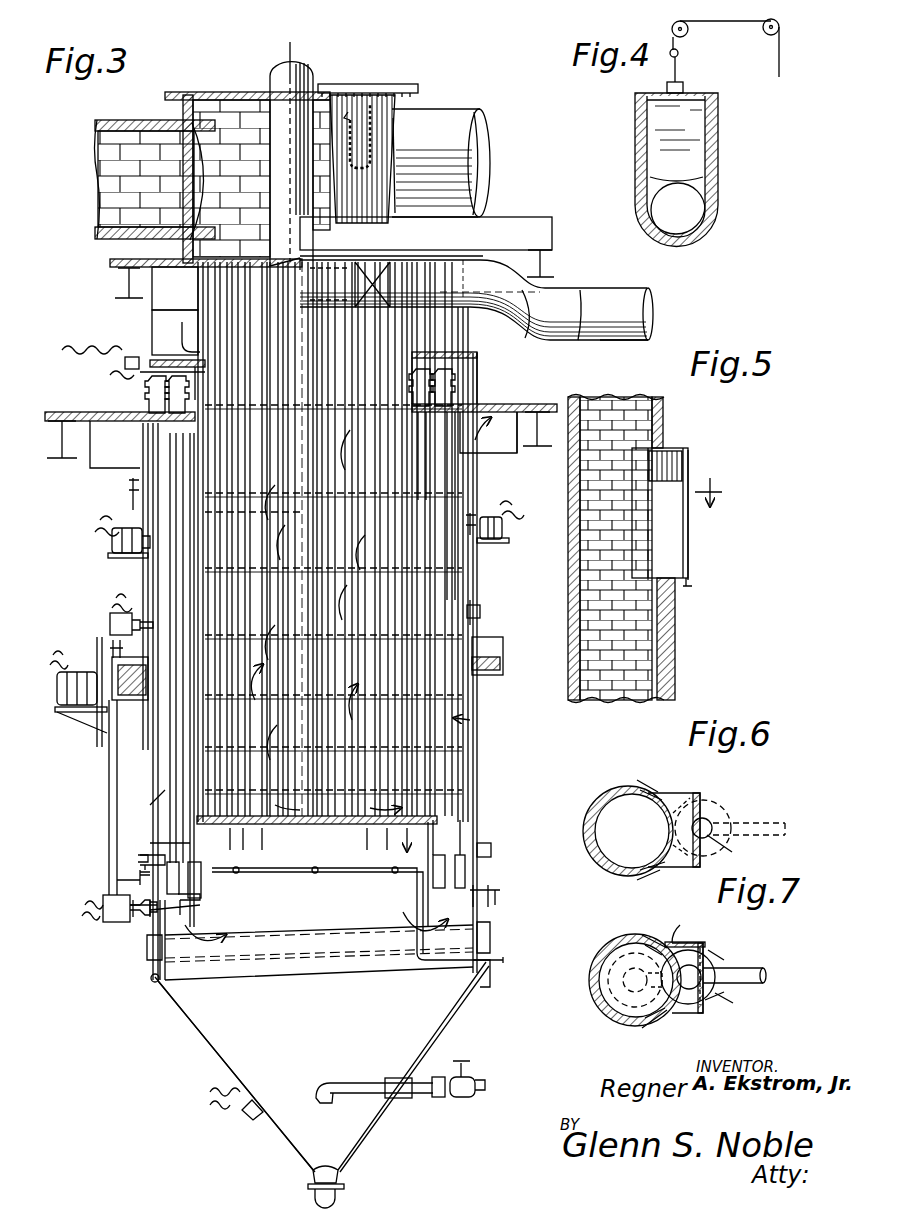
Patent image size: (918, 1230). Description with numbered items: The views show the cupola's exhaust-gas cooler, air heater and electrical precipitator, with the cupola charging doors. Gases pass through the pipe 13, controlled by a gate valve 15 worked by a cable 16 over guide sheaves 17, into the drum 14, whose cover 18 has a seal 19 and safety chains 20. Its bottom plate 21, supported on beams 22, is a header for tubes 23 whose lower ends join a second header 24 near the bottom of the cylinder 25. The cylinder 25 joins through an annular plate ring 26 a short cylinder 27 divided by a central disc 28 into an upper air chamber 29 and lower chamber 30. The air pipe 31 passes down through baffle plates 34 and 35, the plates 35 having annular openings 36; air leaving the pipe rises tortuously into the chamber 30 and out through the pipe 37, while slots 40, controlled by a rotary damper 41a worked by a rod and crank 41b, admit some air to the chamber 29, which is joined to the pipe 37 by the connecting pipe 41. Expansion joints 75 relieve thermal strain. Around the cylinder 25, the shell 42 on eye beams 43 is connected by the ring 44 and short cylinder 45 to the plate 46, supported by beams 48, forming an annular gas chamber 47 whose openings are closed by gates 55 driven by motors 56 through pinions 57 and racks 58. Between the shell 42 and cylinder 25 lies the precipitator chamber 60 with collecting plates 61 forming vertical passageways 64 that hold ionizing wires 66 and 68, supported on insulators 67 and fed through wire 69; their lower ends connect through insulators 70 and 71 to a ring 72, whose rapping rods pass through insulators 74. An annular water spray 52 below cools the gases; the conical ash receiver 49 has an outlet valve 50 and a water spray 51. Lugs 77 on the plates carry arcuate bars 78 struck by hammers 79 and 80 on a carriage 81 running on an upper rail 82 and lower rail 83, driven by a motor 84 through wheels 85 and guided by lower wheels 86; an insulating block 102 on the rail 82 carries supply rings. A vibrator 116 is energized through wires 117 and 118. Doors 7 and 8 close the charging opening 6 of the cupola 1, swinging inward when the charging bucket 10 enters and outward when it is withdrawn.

In FIG. 5, the furnace wall 1 is at (675, 652).
In FIG. 6, the furnace wall 1 is at (595, 860).
In FIG. 7, the furnace wall 1 is at (602, 1005).
In FIG. 5, the charging opening 6 is at (675, 448).
In FIG. 6, the charging opening 6 is at (676, 795).
In FIG. 7, the charging opening 6 is at (687, 943).
In FIG. 6, the door 7 is at (725, 850).
In FIG. 7, the door 7 is at (729, 1005).
In FIG. 5, the door 8 is at (690, 527).
In FIG. 6, the door 8 is at (704, 817).
In FIG. 7, the door 8 is at (712, 952).
In FIG. 6, the charging bucket 10 is at (728, 807).
In FIG. 7, the charging bucket 10 is at (677, 927).
In FIG. 3, the pipe or conduit 13 is at (112, 238).
In FIG. 4, the pipe or conduit 13 is at (718, 223).
In FIG. 3, the drum 14 is at (410, 116).
In FIG. 4, the valve 15 is at (718, 125).
In FIG. 4, the cable 16 is at (684, 50).
In FIG. 4, the guide sheaves 17 is at (766, 36).
In FIG. 3, the cap or cover 18 is at (368, 84).
In FIG. 3, the seal 19 is at (170, 96).
In FIG. 3, the safety chains 20 is at (362, 150).
In FIG. 3, the disc or plate 21 is at (120, 267).
In FIG. 3, the beams 22 is at (530, 265).
In FIG. 3, the tubes 23 is at (225, 460).
In FIG. 3, the second disc or header 24 is at (300, 826).
In FIG. 3, the shell or cylinder 25 is at (430, 838).
In FIG. 3, the annular plate ring 26 is at (172, 345).
In FIG. 3, the short cylinder 27 is at (150, 318).
In FIG. 3, the central disc 28 is at (176, 310).
In FIG. 3, the upper air chamber 29 is at (263, 254).
In FIG. 3, the lower chamber 30 is at (268, 330).
In FIG. 3, the air pipe 31 is at (309, 658).
In FIG. 3, the baffle plates or discs 34 is at (262, 405).
In FIG. 3, the baffle plates 35 is at (272, 493).
In FIG. 3, the annular openings 36 is at (340, 508).
In FIG. 3, the pipe 37 is at (618, 337).
In FIG. 3, the slots 40 is at (304, 264).
In FIG. 3, the connecting pipe 41 is at (543, 305).
In FIG. 3, the rotary damper 41a is at (314, 289).
In FIG. 3, the rod and crank 41b is at (293, 50).
In FIG. 3, the cylinder or shell 42 is at (150, 843).
In FIG. 3, the eye beams 43 is at (150, 958).
In FIG. 3, the annular plate or ring 44 is at (468, 453).
In FIG. 3, the short cylinder 45 is at (517, 450).
In FIG. 3, the plate 46 is at (488, 404).
In FIG. 3, the annular gas chamber 47 is at (100, 468).
In FIG. 3, the beams 48 is at (57, 455).
In FIG. 3, the conical ash receiving member 49 is at (205, 1038).
In FIG. 3, the outlet valve 50 is at (337, 1195).
In FIG. 3, the water spray 51 is at (332, 1104).
In FIG. 3, the annular water spray 52 is at (345, 873).
In FIG. 3, the gates 55 is at (143, 440).
In FIG. 3, the motors 56 is at (110, 548).
In FIG. 3, the pinions 57 is at (492, 555).
In FIG. 3, the racks 58 is at (132, 500).
In FIG. 3, the annular electrical precipitator chamber 60 is at (158, 775).
In FIG. 3, the collecting plates 61 is at (167, 748).
In FIG. 3, the vertical passageways 64 is at (158, 576).
In FIG. 3, the ionizing electrodes or wires 66 is at (170, 728).
In FIG. 3, the insulators 67 is at (150, 400).
In FIG. 3, the wires or electrodes 68 is at (190, 788).
In FIG. 3, the wire 69 is at (108, 356).
In FIG. 3, the insulators 70 is at (178, 862).
In FIG. 3, the insulators 71 is at (200, 865).
In FIG. 3, the ring 72 is at (185, 900).
In FIG. 3, the insulators 74 is at (150, 917).
In FIG. 3, the expansion joints 75 is at (160, 362).
In FIG. 3, the lugs or projections 77 is at (472, 606).
In FIG. 3, the arcuate bar 78 is at (481, 611).
In FIG. 3, the hammer 79 is at (110, 621).
In FIG. 3, the hammer 80 is at (110, 920).
In FIG. 3, the car or carriage 81 is at (108, 764).
In FIG. 3, the upper rail 82 is at (503, 640).
In FIG. 3, the lower rail 83 is at (491, 850).
In FIG. 3, the motor 84 is at (70, 690).
In FIG. 3, the driving and supporting wheels 85 is at (122, 648).
In FIG. 3, the lower guide wheels 86 is at (115, 880).
In FIG. 3, the circular insulating block 102 is at (500, 664).
In FIG. 3, the vibrator 116 is at (252, 1120).
In FIG. 3, the wire 117 is at (225, 1090).
In FIG. 3, the wire 118 is at (226, 1108).